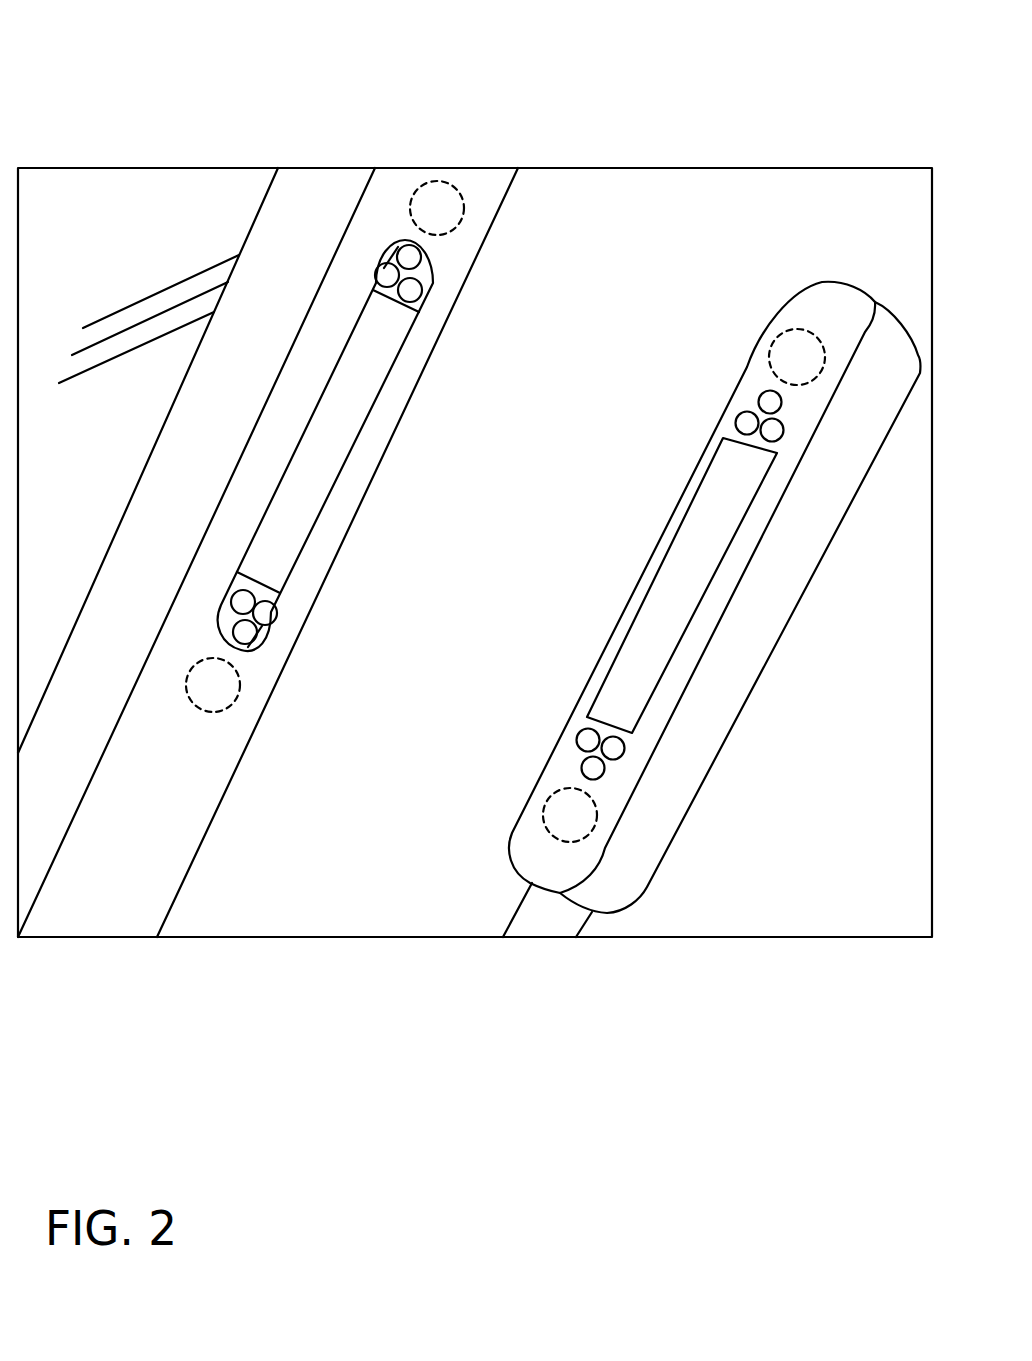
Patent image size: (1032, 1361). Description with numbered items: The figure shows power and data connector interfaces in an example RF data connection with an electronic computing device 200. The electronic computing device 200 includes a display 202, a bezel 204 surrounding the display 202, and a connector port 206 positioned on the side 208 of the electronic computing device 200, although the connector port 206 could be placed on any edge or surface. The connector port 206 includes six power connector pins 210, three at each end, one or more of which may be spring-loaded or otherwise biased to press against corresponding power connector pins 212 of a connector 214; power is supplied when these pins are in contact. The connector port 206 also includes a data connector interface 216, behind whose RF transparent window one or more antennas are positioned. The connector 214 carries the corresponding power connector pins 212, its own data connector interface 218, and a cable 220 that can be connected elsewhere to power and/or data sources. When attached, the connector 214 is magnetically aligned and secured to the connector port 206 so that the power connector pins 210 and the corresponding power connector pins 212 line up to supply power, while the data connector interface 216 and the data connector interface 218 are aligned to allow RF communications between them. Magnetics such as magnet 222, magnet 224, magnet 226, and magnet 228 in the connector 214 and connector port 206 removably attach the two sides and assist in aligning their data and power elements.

The electronic computing device 200 is at (156, 849).
The display 202 is at (151, 207).
The bezel 204 is at (299, 207).
The connector port 206 is at (386, 472).
The side 208 is at (386, 185).
The power connector pins 210 is at (443, 333).
The corresponding power connector pins 212 is at (740, 387).
The connector 214 is at (670, 572).
The data connector interface 216 is at (348, 420).
The data connector interface 218 is at (648, 525).
The cable 220 is at (547, 923).
The magnet 222 is at (440, 183).
The magnet 224 is at (770, 347).
The magnet 226 is at (590, 828).
The magnet 228 is at (225, 710).